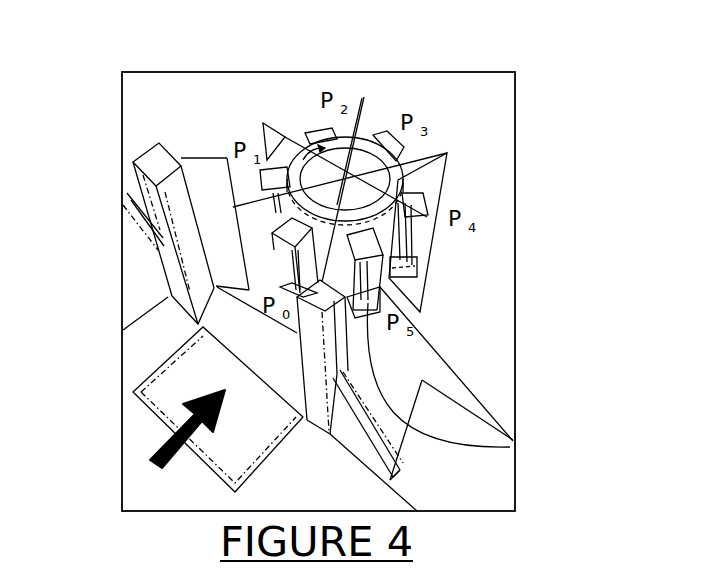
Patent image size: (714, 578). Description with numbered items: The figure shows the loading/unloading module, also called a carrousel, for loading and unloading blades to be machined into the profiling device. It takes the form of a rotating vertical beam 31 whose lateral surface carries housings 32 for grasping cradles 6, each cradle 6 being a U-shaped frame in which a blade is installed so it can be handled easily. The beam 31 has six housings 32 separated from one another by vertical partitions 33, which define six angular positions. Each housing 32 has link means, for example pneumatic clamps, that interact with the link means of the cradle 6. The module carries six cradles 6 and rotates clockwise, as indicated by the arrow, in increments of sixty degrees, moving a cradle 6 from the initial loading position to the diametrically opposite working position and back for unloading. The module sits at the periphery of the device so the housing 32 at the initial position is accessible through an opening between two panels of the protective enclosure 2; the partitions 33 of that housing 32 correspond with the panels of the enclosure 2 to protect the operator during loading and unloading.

The protective enclosure 2 is at (131, 153).
The cradle 6 is at (506, 447).
The rotating vertical beam 31 is at (340, 148).
The housing 32 is at (402, 192).
The vertical partition 33 is at (282, 138).